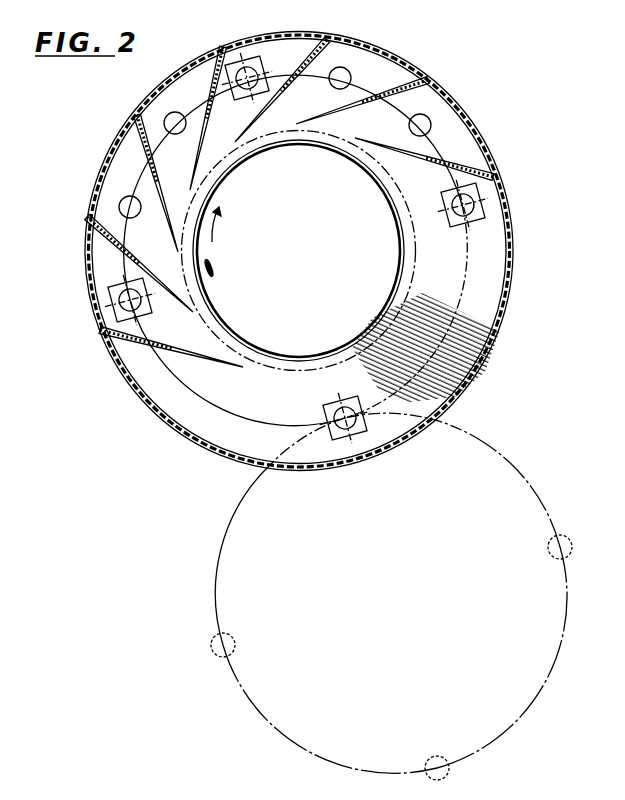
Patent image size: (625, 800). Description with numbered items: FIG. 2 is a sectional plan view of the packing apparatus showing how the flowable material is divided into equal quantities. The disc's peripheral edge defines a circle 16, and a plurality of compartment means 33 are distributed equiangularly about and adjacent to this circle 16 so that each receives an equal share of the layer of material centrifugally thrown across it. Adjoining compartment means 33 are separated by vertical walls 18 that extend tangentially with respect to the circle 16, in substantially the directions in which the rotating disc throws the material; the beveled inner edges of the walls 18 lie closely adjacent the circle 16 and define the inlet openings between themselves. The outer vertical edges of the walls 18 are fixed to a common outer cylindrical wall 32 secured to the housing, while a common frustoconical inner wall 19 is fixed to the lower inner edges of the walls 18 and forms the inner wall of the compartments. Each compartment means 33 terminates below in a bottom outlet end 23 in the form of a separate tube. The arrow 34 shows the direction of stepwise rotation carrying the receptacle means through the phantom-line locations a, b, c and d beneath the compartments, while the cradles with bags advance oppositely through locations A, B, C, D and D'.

The circle 16 is at (222, 163).
The vertical walls 18 is at (155, 181).
The inner wall 19 is at (215, 311).
The bottom outlet ends 23 is at (250, 72).
The outer cylindrical wall 32 is at (113, 148).
The compartment means 33 is at (160, 110).
The arrow 34 is at (213, 241).